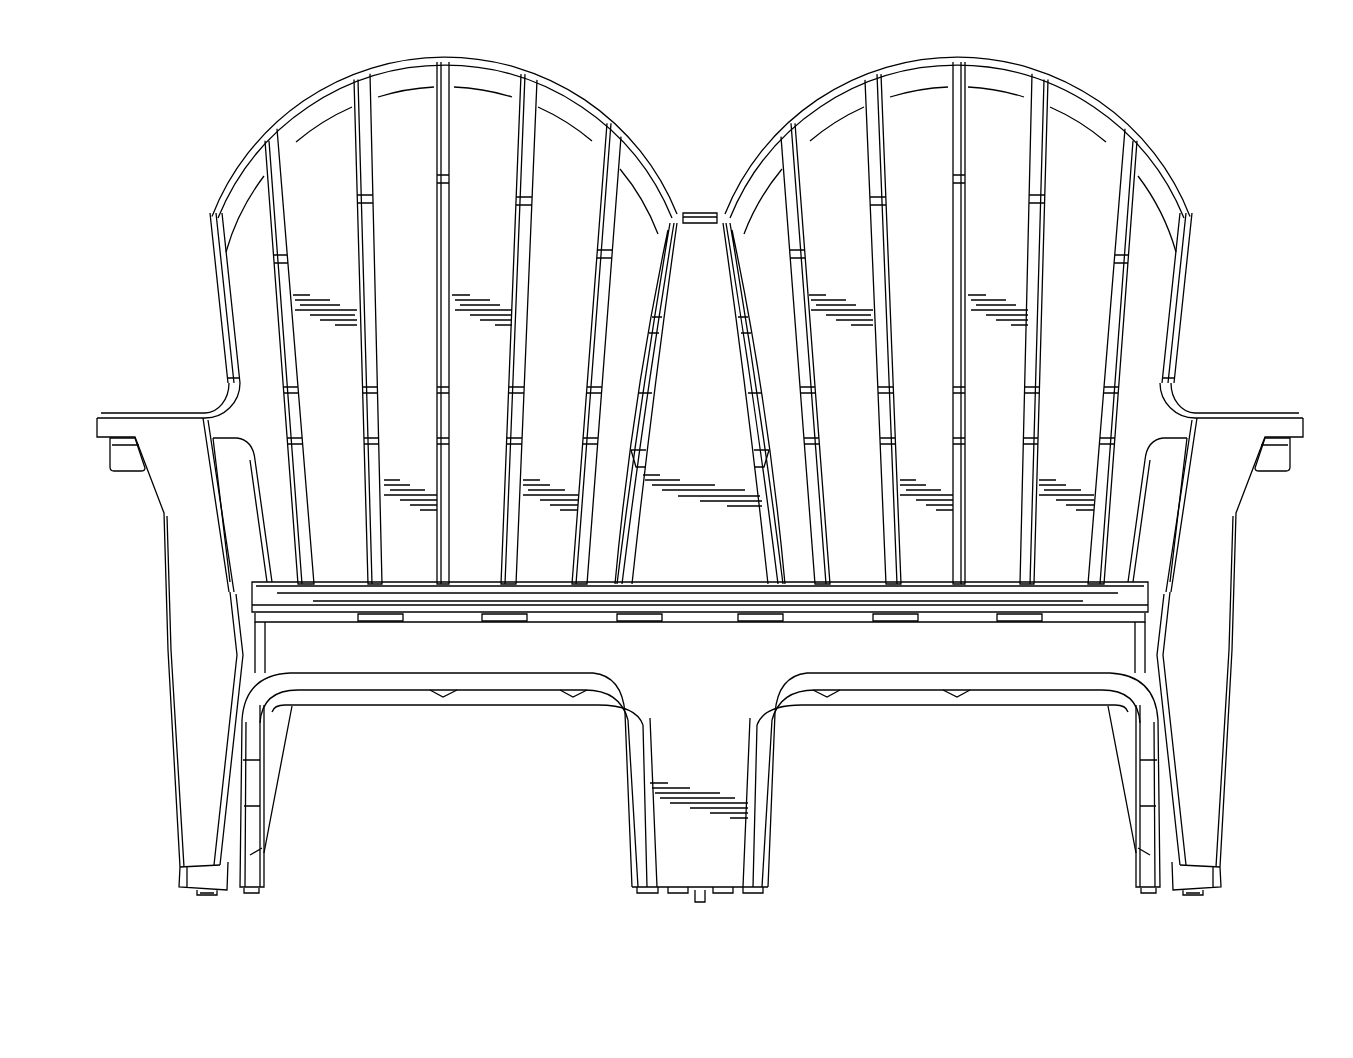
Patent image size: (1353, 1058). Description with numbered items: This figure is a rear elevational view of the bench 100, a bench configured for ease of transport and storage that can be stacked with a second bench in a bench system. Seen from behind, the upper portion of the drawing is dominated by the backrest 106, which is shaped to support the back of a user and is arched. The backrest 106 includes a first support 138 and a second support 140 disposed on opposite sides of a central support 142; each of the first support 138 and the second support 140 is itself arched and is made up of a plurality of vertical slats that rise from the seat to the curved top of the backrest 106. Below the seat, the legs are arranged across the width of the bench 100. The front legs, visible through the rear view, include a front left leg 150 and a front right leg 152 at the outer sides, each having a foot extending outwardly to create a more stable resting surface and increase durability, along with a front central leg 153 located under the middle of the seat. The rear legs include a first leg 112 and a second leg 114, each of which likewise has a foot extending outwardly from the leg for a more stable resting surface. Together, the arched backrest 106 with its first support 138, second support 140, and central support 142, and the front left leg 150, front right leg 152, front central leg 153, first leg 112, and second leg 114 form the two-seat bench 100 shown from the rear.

The bench 100 is at (703, 114).
The backrest 106 is at (443, 311).
The first support 138 is at (405, 122).
The second support 140 is at (836, 118).
The central support 142 is at (698, 275).
The front left leg 150 is at (192, 783).
The front right leg 152 is at (1210, 783).
The first leg 112 is at (257, 875).
The second leg 114 is at (1148, 875).
The front central leg 153 is at (732, 843).